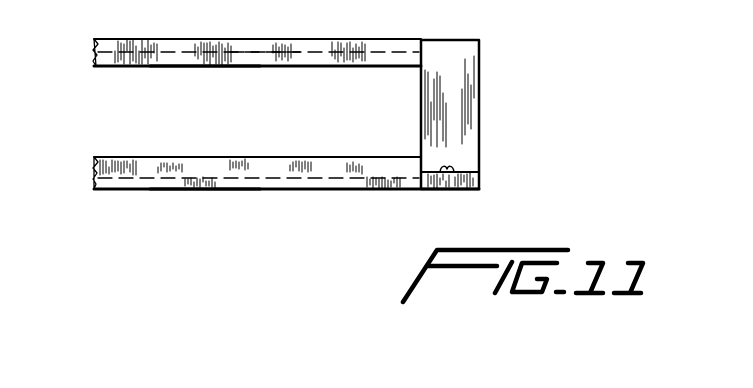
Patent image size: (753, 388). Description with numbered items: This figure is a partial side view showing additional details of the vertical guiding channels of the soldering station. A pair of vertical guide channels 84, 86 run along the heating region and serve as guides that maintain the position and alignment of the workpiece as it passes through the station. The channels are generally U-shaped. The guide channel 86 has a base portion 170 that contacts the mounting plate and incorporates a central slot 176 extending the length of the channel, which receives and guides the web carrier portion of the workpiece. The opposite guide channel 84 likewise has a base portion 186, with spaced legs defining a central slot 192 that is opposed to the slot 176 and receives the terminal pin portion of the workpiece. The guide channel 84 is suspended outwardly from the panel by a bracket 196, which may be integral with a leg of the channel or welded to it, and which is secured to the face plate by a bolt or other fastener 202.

The vertical guide channel 84 is at (200, 68).
The vertical guide channel 86 is at (205, 193).
The base portion 170 is at (312, 190).
The central slot 176 is at (137, 173).
The base portion 186 is at (308, 52).
The central slot 192 is at (262, 58).
The bracket 196 is at (467, 110).
The fastener 202 is at (457, 166).